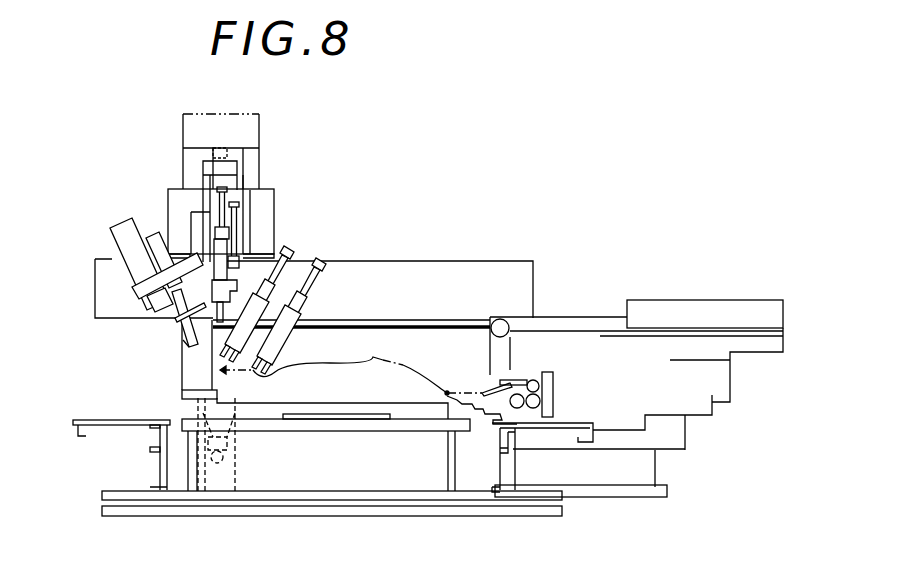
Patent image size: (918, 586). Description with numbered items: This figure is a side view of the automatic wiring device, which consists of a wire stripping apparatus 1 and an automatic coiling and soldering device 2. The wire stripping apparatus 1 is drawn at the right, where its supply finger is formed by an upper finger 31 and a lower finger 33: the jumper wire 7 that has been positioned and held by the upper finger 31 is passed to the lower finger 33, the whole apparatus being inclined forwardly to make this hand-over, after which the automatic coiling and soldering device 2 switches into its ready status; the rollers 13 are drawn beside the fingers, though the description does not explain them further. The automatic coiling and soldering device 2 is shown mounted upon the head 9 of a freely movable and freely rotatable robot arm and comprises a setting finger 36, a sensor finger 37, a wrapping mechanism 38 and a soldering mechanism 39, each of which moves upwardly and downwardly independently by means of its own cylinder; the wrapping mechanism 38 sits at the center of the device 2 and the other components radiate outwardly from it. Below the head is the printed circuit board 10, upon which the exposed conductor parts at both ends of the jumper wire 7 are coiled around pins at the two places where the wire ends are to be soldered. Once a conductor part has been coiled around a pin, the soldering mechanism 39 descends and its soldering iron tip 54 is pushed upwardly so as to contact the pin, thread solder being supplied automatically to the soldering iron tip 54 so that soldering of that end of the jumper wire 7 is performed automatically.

The wire stripping apparatus 1 is at (633, 290).
The automatic coiling and soldering device 2 is at (152, 206).
The jumper wire 7 is at (340, 367).
The head 9 is at (247, 128).
The printed circuit board 10 is at (337, 423).
The feed rollers 13 is at (535, 381).
The upper finger 31 is at (486, 385).
The lower finger 33 is at (460, 410).
The setting finger 36 is at (293, 312).
The sensor finger 37 is at (283, 268).
The wrapping mechanism 38 is at (223, 245).
The soldering mechanism 39 is at (137, 262).
The soldering iron tip 54 is at (205, 353).